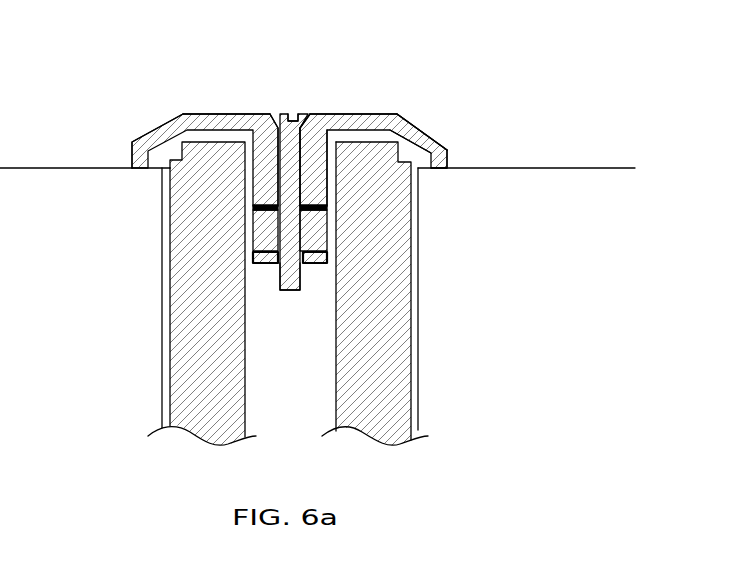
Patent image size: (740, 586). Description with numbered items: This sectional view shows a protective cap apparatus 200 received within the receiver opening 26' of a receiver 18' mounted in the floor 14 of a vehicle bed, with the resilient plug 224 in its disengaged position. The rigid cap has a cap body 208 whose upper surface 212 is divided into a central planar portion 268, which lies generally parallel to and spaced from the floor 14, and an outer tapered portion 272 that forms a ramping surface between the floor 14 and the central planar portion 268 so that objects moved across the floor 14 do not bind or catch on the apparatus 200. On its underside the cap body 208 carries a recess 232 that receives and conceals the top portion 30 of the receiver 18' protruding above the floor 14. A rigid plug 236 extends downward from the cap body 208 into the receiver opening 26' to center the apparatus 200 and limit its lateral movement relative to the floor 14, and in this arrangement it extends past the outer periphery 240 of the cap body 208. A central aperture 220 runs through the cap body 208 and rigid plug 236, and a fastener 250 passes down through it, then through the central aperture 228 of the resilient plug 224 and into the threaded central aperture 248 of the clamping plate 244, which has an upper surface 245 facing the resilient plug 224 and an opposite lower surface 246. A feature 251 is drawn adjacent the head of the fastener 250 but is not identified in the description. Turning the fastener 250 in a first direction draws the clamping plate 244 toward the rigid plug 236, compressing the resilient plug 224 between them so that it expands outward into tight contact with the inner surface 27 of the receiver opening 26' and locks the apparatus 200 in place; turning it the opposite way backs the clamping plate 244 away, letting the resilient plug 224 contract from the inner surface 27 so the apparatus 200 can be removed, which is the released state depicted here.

The floor 14 is at (597, 168).
The protective cap apparatus 200 is at (466, 72).
The upper surface 212 is at (175, 108).
The outer tapered portion 272 is at (155, 132).
The central planar portion 268 is at (227, 113).
The cap body 208 is at (401, 126).
The top portion 30 is at (407, 148).
The recess 232 is at (388, 137).
The outer periphery 240 is at (441, 166).
The rigid plug 236 is at (312, 175).
The central aperture 220 is at (300, 140).
The fastener 250 is at (298, 112).
The pin head notch 251 is at (288, 110).
The central aperture 228 is at (290, 223).
The resilient plug 224 is at (297, 227).
The clamping plate 244 is at (328, 257).
The upper surface 245 is at (261, 248).
The lower surface 246 is at (258, 266).
The central aperture 248 is at (283, 263).
The inner surface 27 is at (335, 352).
The receiver 18' is at (407, 293).
The receiver opening 26' is at (387, 306).